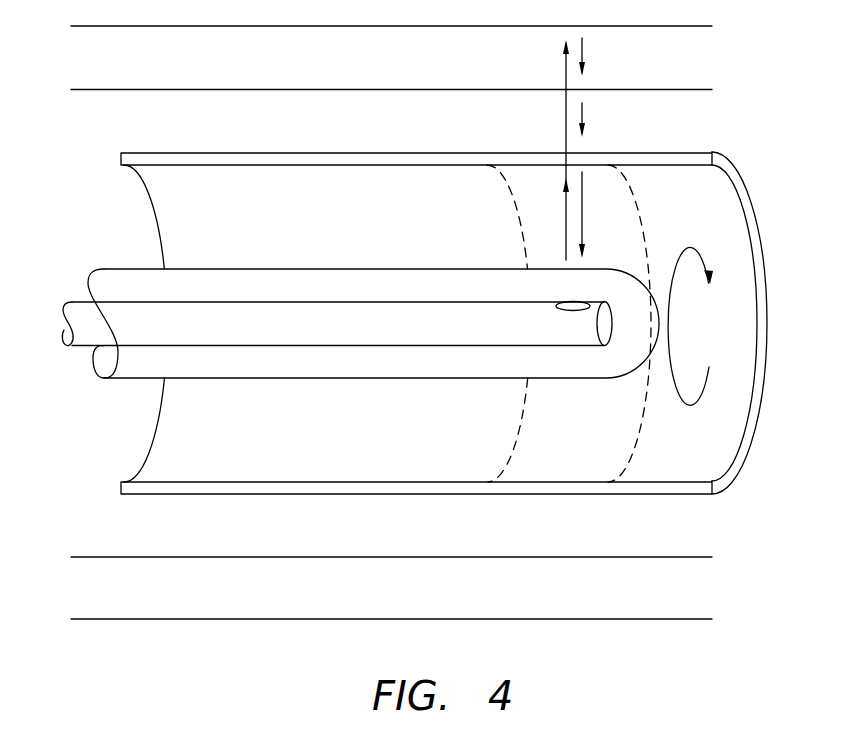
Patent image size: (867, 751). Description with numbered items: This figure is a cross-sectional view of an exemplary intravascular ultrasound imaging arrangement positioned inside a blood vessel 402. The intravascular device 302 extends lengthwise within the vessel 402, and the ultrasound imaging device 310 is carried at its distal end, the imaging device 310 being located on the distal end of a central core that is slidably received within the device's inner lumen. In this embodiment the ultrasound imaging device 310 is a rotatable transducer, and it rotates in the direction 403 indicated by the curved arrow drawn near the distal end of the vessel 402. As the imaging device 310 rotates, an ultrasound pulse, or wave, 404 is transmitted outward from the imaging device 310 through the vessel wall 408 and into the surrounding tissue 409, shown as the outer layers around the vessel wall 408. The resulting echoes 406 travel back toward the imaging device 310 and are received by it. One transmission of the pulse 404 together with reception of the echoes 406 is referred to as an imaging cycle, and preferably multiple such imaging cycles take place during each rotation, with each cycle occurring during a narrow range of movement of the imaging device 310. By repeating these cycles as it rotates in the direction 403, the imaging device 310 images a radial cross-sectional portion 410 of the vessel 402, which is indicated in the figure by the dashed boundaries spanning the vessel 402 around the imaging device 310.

The intravascular device 302 is at (130, 401).
The ultrasound imaging device 310 is at (575, 347).
The blood vessel 402 is at (344, 507).
The direction 403 is at (697, 397).
The ultrasound pulse 404 is at (565, 122).
The echoes 406 is at (582, 48).
The vessel wall 408 is at (764, 257).
The surrounding tissue 409 is at (648, 619).
The radial cross-sectional portion 410 is at (513, 451).